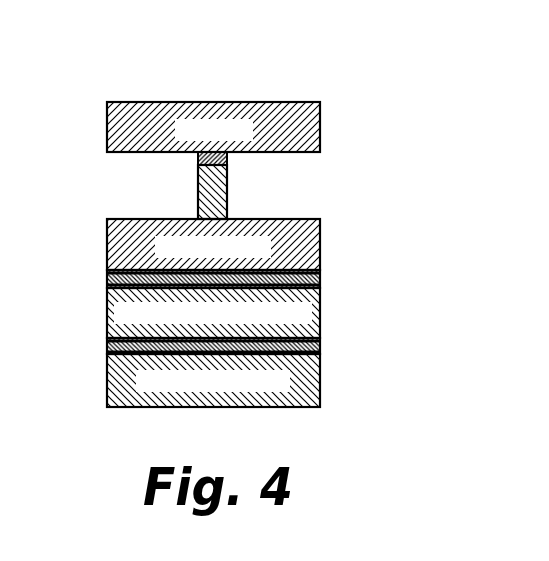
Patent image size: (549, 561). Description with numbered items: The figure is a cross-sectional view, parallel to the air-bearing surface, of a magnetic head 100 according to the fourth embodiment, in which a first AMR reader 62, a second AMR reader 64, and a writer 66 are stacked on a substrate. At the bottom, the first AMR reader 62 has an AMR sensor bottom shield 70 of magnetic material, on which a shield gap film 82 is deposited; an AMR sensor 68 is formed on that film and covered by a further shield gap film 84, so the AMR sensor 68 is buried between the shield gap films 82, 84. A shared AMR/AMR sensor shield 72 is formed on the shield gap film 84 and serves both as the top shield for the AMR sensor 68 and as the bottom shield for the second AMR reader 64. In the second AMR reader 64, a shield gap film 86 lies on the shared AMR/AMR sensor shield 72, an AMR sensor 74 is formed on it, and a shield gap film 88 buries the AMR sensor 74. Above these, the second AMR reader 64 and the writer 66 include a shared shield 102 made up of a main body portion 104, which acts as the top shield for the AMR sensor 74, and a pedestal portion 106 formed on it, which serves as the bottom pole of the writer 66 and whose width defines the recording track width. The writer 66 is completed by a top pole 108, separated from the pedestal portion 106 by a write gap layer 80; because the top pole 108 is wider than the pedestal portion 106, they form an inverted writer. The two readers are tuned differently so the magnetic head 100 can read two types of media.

The magnetic head 100 is at (272, 64).
The top pole 108 is at (320, 125).
The write gap layer 80 is at (228, 157).
The pedestal portion 106 is at (227, 203).
The main body portion 104 is at (300, 219).
The shared shield 102 is at (365, 158).
The shield gap film 86 is at (320, 281).
The shield gap film 88 is at (213, 279).
The shared AMR/AMR sensor shield 72 is at (320, 315).
The shield gap film 82 is at (320, 347).
The shield gap film 84 is at (213, 346).
The AMR sensor bottom shield 70 is at (320, 380).
The AMR sensor 74 is at (165, 277).
The AMR sensor 68 is at (175, 338).
The writer 66 is at (45, 102).
The second AMR reader 64 is at (62, 218).
The first AMR reader 62 is at (80, 287).